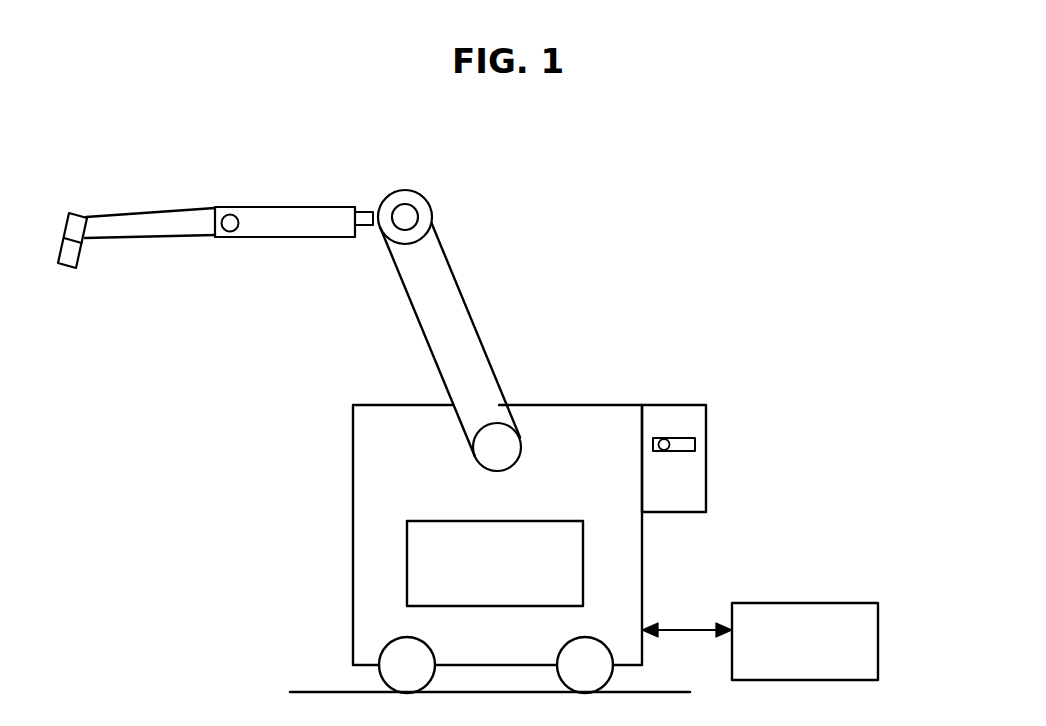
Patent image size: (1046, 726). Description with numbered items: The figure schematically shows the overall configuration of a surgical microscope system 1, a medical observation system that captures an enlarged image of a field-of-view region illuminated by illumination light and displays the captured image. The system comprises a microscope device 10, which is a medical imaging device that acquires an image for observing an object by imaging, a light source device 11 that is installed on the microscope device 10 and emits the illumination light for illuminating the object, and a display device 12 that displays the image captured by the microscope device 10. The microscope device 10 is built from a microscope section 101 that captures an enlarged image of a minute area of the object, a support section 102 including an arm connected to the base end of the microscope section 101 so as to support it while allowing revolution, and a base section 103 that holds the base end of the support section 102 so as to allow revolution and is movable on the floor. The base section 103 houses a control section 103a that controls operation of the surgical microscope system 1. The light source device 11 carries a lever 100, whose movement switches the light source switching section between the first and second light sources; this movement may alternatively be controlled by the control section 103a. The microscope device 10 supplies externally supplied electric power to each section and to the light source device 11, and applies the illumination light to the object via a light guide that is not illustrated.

The surgical microscope system 1 is at (667, 310).
The microscope device 10 is at (448, 256).
The light source device 11 is at (706, 415).
The display device 12 is at (878, 630).
The lever 100 is at (663, 438).
The microscope section 101 is at (78, 248).
The support section 102 is at (270, 230).
The base section 103 is at (353, 578).
The control section 103a is at (534, 498).